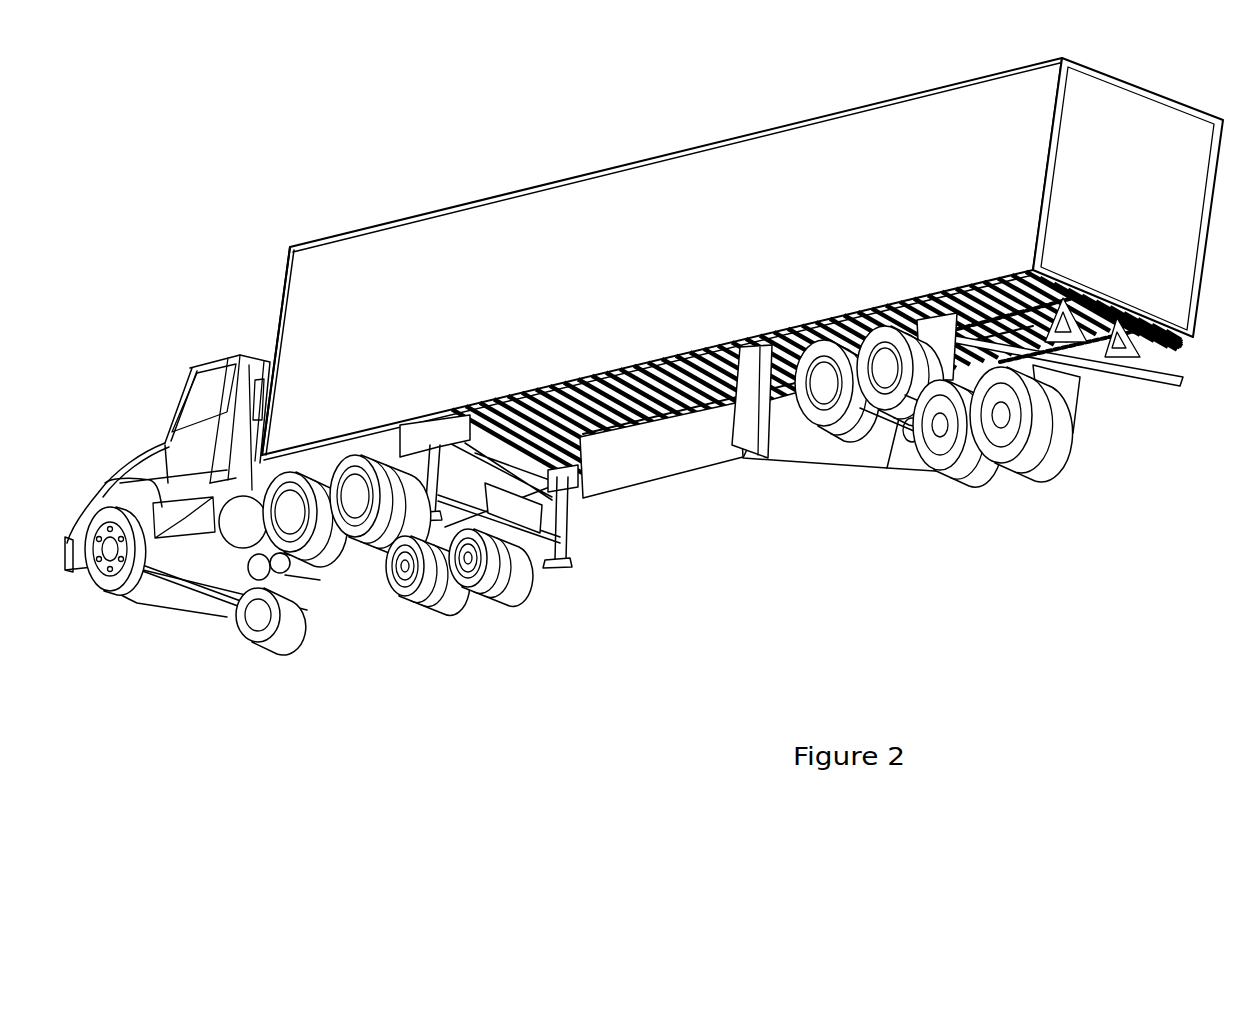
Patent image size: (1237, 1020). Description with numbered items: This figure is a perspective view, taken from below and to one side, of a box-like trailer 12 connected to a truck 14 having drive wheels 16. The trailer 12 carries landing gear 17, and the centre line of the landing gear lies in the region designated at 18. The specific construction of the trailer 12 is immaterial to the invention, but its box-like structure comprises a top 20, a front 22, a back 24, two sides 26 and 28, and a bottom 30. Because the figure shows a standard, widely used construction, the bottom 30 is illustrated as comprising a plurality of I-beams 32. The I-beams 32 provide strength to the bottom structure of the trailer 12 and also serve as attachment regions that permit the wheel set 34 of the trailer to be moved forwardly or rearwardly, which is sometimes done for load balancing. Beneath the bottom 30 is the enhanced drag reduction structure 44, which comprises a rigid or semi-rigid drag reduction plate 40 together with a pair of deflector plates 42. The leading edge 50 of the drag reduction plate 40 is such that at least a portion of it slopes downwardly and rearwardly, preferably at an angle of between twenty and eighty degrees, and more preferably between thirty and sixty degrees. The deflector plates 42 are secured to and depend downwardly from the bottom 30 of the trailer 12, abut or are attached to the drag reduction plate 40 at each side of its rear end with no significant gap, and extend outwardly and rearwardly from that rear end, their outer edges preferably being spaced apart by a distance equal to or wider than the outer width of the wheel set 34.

The trailer 12 is at (714, 267).
The truck 14 is at (299, 530).
The drive wheels 16 is at (500, 587).
The landing gear 17 is at (560, 567).
The landing gear centre line region 18 is at (519, 495).
The top 20 is at (714, 269).
The front 22 is at (272, 283).
The back 24 is at (1108, 212).
The side 26 is at (1210, 301).
The side 28 is at (898, 196).
The bottom 30 is at (550, 410).
The I-beams 32 is at (758, 360).
The wheel set 34 is at (992, 478).
The drag reduction plate 40 is at (667, 460).
The deflector plates 42 is at (866, 468).
The drag reduction structure 44 is at (770, 480).
The leading edge 50 is at (577, 494).